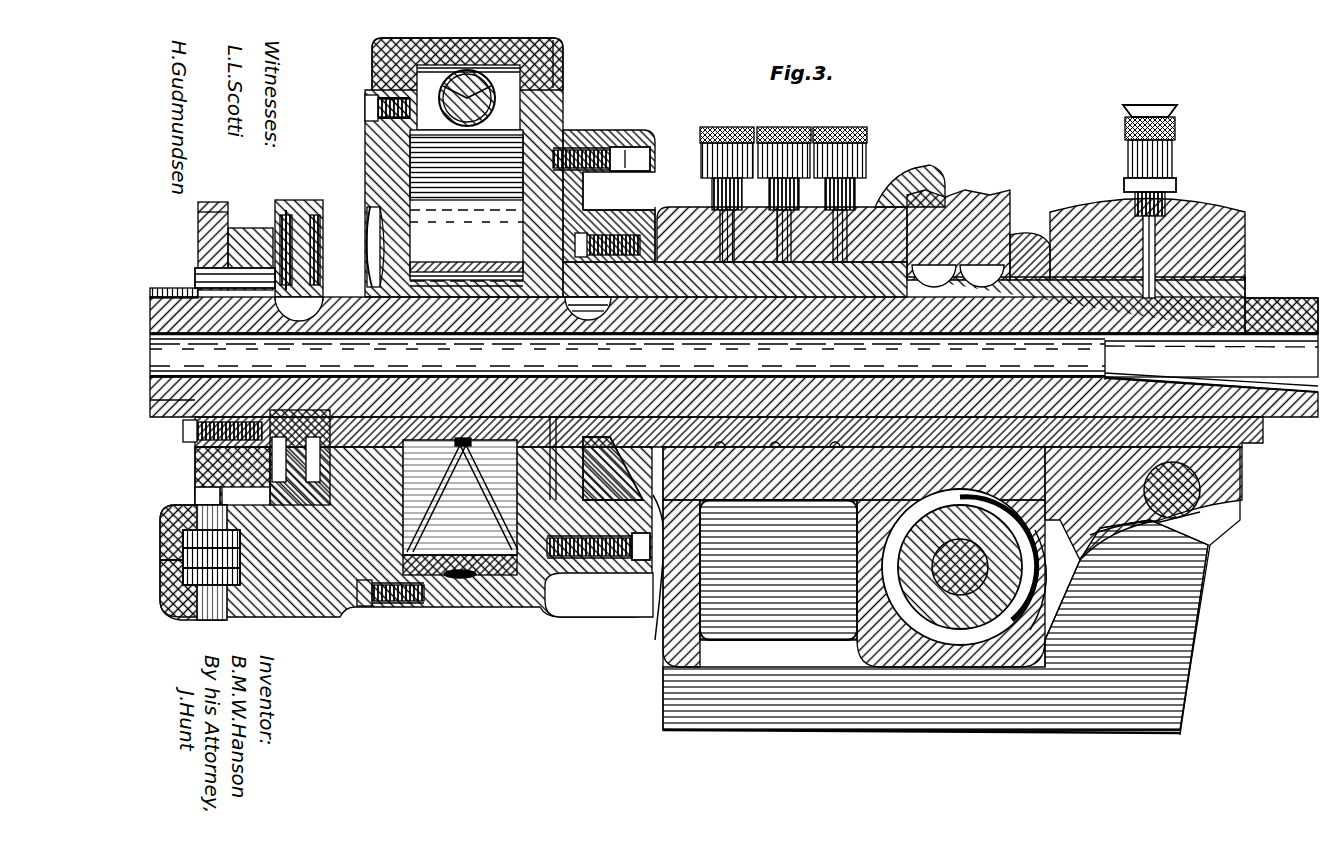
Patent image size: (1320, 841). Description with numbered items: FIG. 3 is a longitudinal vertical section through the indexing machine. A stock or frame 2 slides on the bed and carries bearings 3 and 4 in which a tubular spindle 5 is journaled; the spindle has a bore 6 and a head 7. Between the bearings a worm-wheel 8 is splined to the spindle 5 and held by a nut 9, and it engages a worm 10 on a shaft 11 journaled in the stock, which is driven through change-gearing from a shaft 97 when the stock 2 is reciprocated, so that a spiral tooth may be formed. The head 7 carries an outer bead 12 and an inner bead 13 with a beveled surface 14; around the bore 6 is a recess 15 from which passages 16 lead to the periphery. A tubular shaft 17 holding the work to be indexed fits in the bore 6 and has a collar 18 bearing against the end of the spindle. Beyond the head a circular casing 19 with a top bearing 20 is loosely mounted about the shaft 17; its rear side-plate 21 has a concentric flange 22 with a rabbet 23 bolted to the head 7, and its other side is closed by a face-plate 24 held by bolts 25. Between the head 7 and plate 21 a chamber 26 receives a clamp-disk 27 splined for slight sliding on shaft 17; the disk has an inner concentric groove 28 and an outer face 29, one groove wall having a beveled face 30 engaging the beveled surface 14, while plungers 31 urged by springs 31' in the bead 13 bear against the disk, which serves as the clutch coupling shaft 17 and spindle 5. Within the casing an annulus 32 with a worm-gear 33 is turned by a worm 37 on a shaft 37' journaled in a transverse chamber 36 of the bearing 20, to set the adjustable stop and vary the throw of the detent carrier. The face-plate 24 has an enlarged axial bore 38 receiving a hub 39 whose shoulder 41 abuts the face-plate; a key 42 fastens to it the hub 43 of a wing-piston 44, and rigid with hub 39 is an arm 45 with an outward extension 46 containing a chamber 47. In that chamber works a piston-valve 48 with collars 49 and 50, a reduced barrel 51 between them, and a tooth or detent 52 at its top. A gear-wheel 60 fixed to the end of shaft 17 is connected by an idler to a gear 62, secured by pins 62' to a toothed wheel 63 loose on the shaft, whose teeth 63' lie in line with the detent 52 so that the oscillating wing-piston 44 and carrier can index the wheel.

The stock or frame 2 is at (951, 591).
The bearing 3 is at (872, 228).
The bearing 4 is at (1210, 228).
The spindle 5 is at (900, 210).
The bore 6 is at (912, 282).
The head 7 is at (608, 232).
The worm-wheel 8 is at (978, 200).
The nut 9 is at (1032, 235).
The worm 10 is at (935, 548).
The shaft 11 is at (1002, 540).
The bead 12 is at (592, 200).
The bead 13 is at (645, 175).
The beveled surface 14 is at (592, 548).
The recess 15 is at (578, 525).
The passages 16 is at (652, 565).
The tubular shaft 17 is at (1195, 415).
The collar 18 is at (1250, 290).
The circular casing 19 is at (565, 80).
The bearing 20 is at (398, 88).
The rear side-plate 21 is at (520, 218).
The concentric flange 22 is at (600, 172).
The rabbet 23 is at (630, 580).
The face-plate 24 is at (368, 158).
The bolts 25 is at (365, 106).
The chamber 26 is at (505, 562).
The clamp-disk 27 is at (545, 562).
The inner concentric groove 28 is at (615, 212).
The outer face 29 is at (470, 580).
The beveled face 30 is at (642, 140).
The plungers 31 is at (640, 185).
The springs 31' is at (638, 219).
The annulus 32 is at (405, 610).
The worm-gear 33 is at (430, 598).
The transverse chamber 36 is at (520, 88).
The worm 37 is at (366, 117).
The shaft 37' is at (372, 136).
The enlarged axial bore 38 is at (377, 221).
The hub 39 is at (378, 235).
The shoulder 41 is at (378, 250).
The key 42 is at (413, 272).
The hub 43 is at (440, 270).
The wing-piston 44 is at (460, 506).
The arm 45 is at (340, 470).
The outward extension 46 is at (252, 615).
The chamber 47 is at (242, 585).
The piston-valve 48 is at (220, 600).
The collar 49 is at (180, 520).
The collar 50 is at (195, 612).
The reduced barrel 51 is at (182, 605).
The tooth or detent 52 is at (196, 494).
The gear-wheel 60 is at (305, 205).
The gear 62 is at (265, 233).
The pins 62' is at (216, 263).
The toothed wheel 63 is at (193, 246).
The teeth 63' is at (216, 231).
The shaft 97 is at (1200, 512).